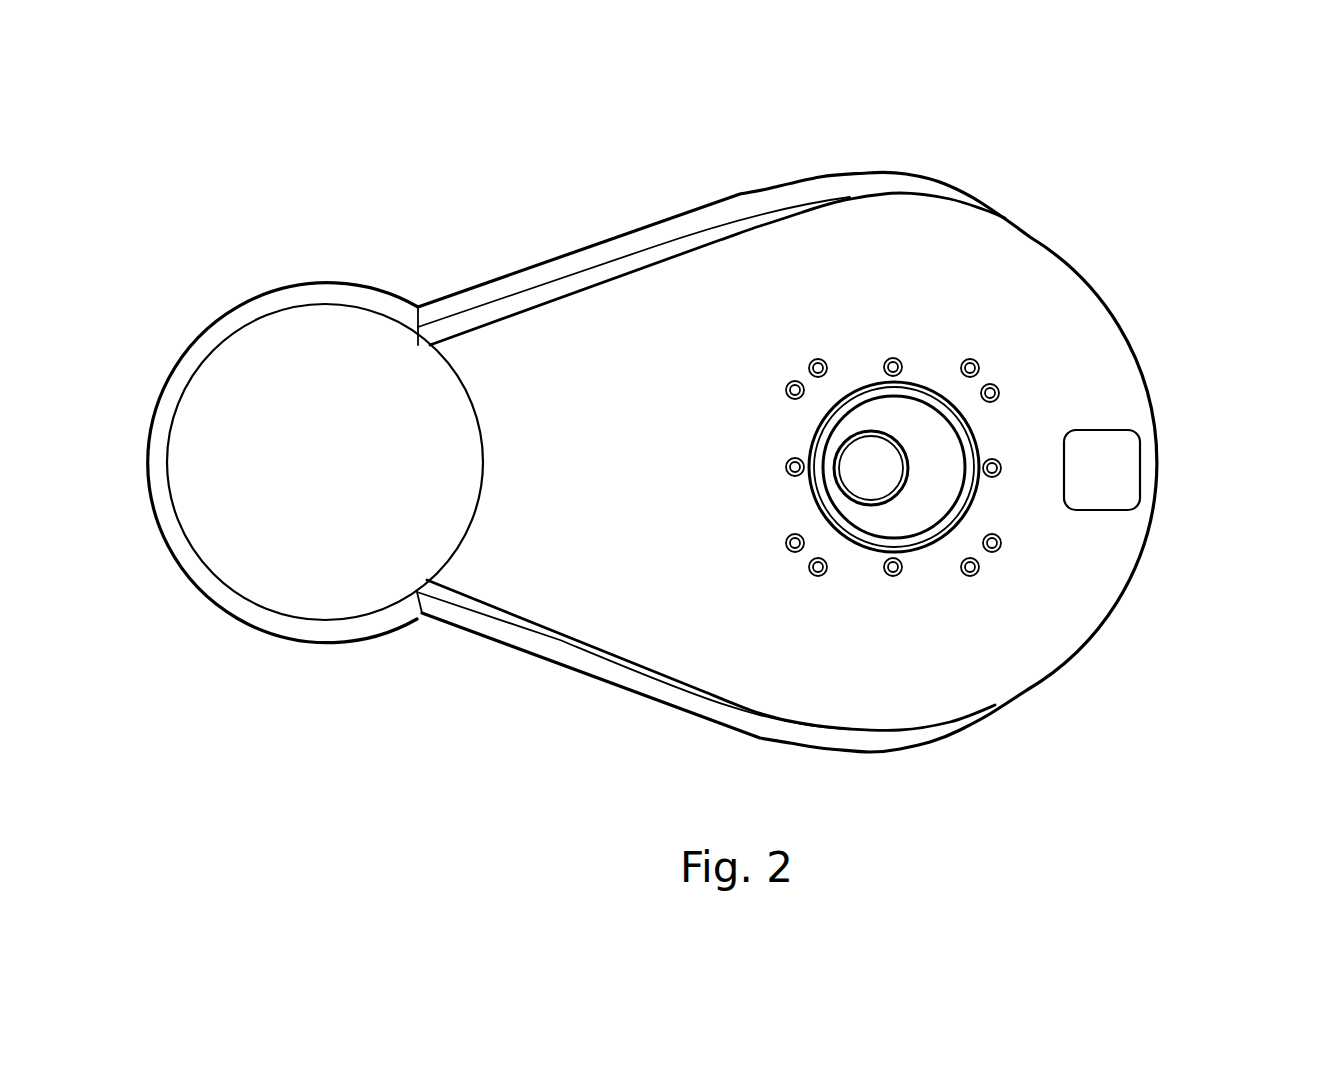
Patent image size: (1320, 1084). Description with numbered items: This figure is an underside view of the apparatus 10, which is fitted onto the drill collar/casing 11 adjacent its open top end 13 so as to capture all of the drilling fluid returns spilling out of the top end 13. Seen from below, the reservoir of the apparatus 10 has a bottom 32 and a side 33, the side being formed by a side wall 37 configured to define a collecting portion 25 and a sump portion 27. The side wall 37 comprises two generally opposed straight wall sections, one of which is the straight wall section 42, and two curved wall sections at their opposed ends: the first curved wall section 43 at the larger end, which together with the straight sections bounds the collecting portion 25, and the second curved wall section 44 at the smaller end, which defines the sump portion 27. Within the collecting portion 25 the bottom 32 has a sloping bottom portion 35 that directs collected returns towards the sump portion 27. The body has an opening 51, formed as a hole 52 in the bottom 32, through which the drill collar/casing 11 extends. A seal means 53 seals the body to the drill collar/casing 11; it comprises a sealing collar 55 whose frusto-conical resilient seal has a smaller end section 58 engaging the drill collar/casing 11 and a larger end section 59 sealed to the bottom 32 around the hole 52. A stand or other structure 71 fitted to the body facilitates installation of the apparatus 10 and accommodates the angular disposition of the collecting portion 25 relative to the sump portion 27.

The apparatus 10 is at (704, 468).
The drill collar/casing 11 is at (882, 468).
The open top end 13 is at (992, 393).
The collecting portion 25 is at (750, 652).
The sump portion 27 is at (322, 595).
The bottom 32 is at (670, 642).
The side 33 is at (723, 230).
The sloping bottom portion 35 is at (517, 587).
The side wall 37 is at (543, 293).
The straight wall section 42 is at (607, 257).
The first curved wall section 43 is at (1133, 592).
The second curved wall section 44 is at (235, 618).
The opening 51 is at (937, 473).
The hole 52 is at (977, 430).
The seal means 53 is at (970, 567).
The sealing collar 55 is at (925, 510).
The smaller end section 58 is at (880, 503).
The larger end section 59 is at (868, 550).
The stand or other structure 71 is at (1140, 465).